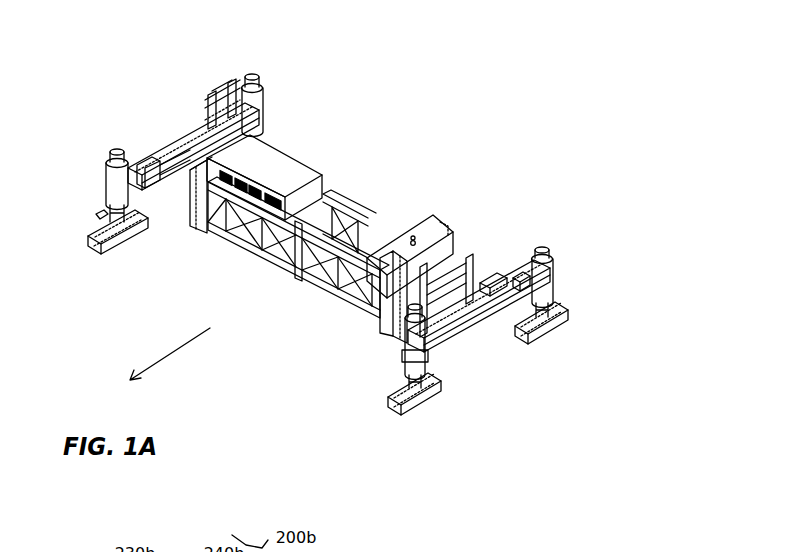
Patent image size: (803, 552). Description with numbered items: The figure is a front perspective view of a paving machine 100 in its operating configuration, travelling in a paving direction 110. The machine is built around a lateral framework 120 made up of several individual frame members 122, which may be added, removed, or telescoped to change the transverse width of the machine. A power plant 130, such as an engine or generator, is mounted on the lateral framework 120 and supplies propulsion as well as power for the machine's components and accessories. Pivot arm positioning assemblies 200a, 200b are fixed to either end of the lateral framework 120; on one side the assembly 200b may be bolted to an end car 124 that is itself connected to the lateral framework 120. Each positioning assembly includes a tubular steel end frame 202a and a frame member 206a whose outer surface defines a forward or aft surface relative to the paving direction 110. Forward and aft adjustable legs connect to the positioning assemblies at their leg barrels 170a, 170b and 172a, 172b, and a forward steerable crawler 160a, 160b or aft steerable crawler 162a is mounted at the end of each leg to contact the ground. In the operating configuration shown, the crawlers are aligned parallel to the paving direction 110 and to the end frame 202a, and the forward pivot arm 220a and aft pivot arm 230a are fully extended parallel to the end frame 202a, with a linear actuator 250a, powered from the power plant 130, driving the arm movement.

The paving machine 100 is at (581, 93).
The paving direction 110 is at (156, 361).
The lateral framework 120 is at (191, 268).
The frame members 122 is at (252, 250).
The end car 124 is at (202, 215).
The power plant 130 is at (289, 163).
The forward steerable crawler 160a is at (390, 406).
The forward steerable crawler 160b is at (90, 240).
The aft steerable crawler 162a is at (570, 325).
The leg barrel 170a is at (402, 362).
The leg barrel 170b is at (106, 172).
The leg barrel 172a is at (542, 278).
The leg barrel 172b is at (256, 114).
The pivot arm positioning assembly 200a is at (451, 432).
The pivot arm positioning assembly 200b is at (231, 83).
The end frame 202a is at (483, 320).
The frame member 206a is at (470, 270).
The forward pivot arm 220a is at (421, 360).
The aft pivot arm 230a is at (513, 276).
The linear actuator 250a is at (496, 278).